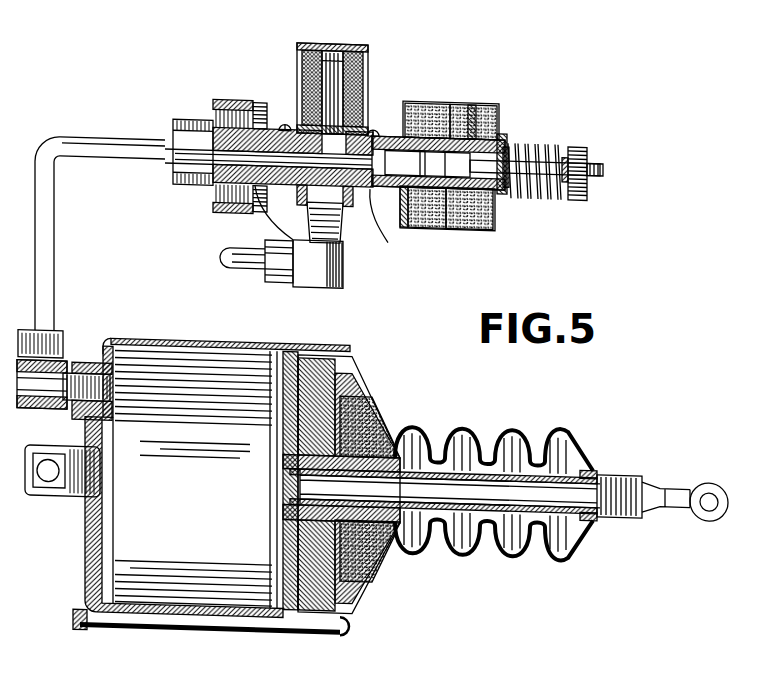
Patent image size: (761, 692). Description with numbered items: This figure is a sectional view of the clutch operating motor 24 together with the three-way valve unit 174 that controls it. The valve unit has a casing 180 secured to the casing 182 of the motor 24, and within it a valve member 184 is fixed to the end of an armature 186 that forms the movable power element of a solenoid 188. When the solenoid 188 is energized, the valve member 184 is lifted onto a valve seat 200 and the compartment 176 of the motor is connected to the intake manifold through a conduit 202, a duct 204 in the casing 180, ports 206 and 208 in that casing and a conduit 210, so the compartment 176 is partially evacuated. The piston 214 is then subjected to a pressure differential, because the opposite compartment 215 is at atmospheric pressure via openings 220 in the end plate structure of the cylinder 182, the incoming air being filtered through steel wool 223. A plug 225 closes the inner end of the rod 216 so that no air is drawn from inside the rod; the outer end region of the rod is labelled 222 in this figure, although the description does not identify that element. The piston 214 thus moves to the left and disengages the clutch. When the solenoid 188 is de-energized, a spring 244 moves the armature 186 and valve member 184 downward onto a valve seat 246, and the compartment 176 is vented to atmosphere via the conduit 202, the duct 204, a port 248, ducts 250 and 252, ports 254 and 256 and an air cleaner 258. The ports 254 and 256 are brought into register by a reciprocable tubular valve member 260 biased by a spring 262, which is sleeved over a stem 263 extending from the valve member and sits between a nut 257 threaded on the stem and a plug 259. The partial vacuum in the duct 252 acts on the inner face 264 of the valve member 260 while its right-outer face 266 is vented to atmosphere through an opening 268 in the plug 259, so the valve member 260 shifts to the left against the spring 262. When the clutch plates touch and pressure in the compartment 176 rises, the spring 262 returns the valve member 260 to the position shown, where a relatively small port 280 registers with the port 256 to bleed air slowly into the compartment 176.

The motor 24 is at (357, 385).
The three-way valve unit 174 is at (380, 237).
The compartment 176 is at (110, 560).
The casing 180 is at (250, 224).
The casing 182 is at (167, 344).
The valve member 184 is at (267, 113).
The armature 186 is at (368, 52).
The solenoid 188 is at (368, 74).
The valve seat 200 is at (297, 92).
The conduit 202 is at (50, 152).
The duct 204 is at (207, 118).
The port 206 is at (352, 187).
The port 208 is at (293, 200).
The conduit 210 is at (237, 272).
The piston 214 is at (290, 536).
The compartment 215 is at (312, 615).
The rod 216 is at (455, 465).
The openings 220 is at (337, 375).
The push rod end 222 is at (560, 435).
The steel wool 223 is at (378, 427).
The plug 225 is at (277, 490).
The spring 244 is at (357, 34).
The valve seat 246 is at (332, 227).
The port 248 is at (368, 94).
The duct 250 is at (368, 106).
The duct 252 is at (423, 105).
The port 254 is at (493, 107).
The port 256 is at (478, 103).
The nut 257 is at (588, 158).
The air cleaner 258 is at (443, 107).
The plug 259 is at (510, 143).
The reciprocable tubular valve member 260 is at (430, 231).
The spring 262 is at (560, 187).
The stem 263 is at (565, 158).
The inner face 264 is at (468, 233).
The right-outer face 266 is at (517, 148).
The opening 268 is at (523, 183).
The port 280 is at (393, 222).